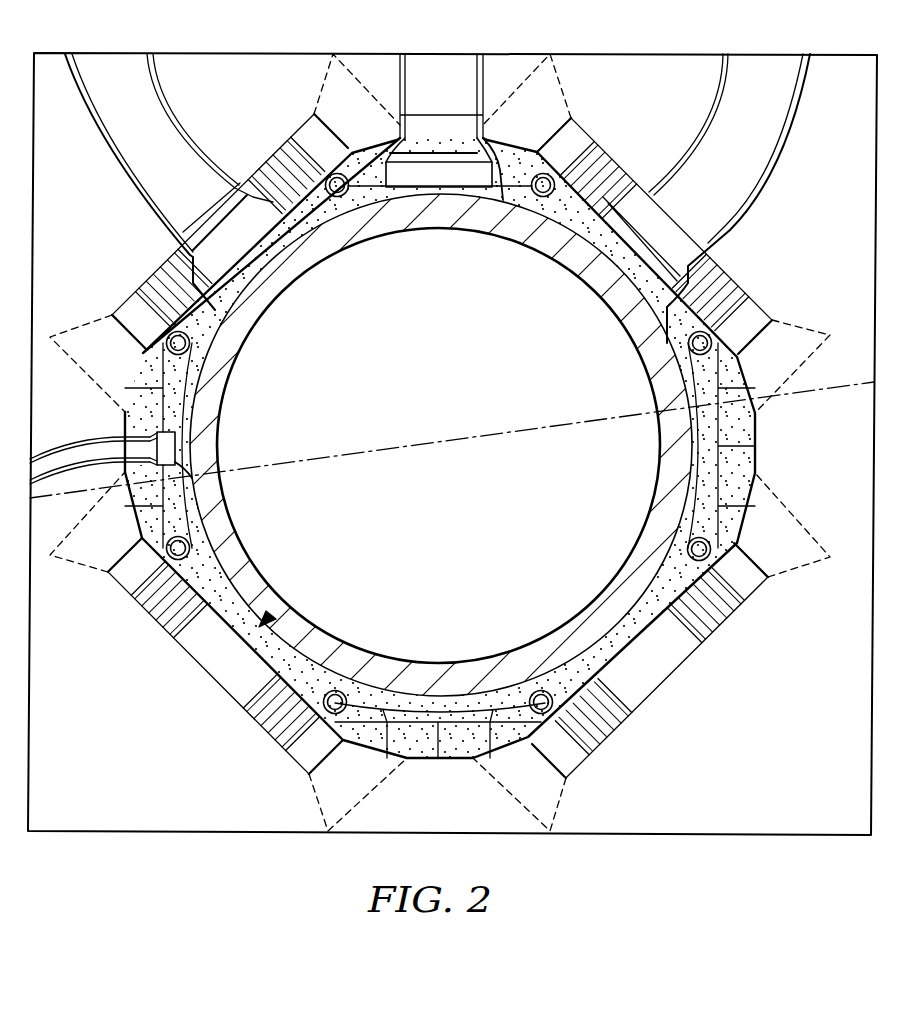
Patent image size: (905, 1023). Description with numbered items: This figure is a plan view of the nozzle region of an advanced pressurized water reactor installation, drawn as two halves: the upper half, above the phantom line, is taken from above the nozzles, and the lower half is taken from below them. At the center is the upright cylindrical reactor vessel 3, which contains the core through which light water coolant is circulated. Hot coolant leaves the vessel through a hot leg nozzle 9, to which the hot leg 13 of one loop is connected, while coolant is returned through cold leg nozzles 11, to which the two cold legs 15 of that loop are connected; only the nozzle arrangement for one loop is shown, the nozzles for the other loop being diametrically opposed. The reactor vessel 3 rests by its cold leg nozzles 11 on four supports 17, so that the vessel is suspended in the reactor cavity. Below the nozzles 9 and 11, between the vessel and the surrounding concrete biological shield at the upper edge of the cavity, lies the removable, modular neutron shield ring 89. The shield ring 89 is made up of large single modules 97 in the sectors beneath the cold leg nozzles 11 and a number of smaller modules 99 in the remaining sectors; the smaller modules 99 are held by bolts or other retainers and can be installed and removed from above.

The reactor vessel 3 is at (630, 342).
The hot leg nozzle 9 is at (433, 150).
The cold leg nozzle 11 is at (652, 232).
The hot leg 13 is at (455, 75).
The cold leg 15 is at (177, 140).
The support 17 is at (598, 152).
The shield ring 89 is at (268, 616).
The single module 97 is at (320, 652).
The smaller module 99 is at (698, 470).